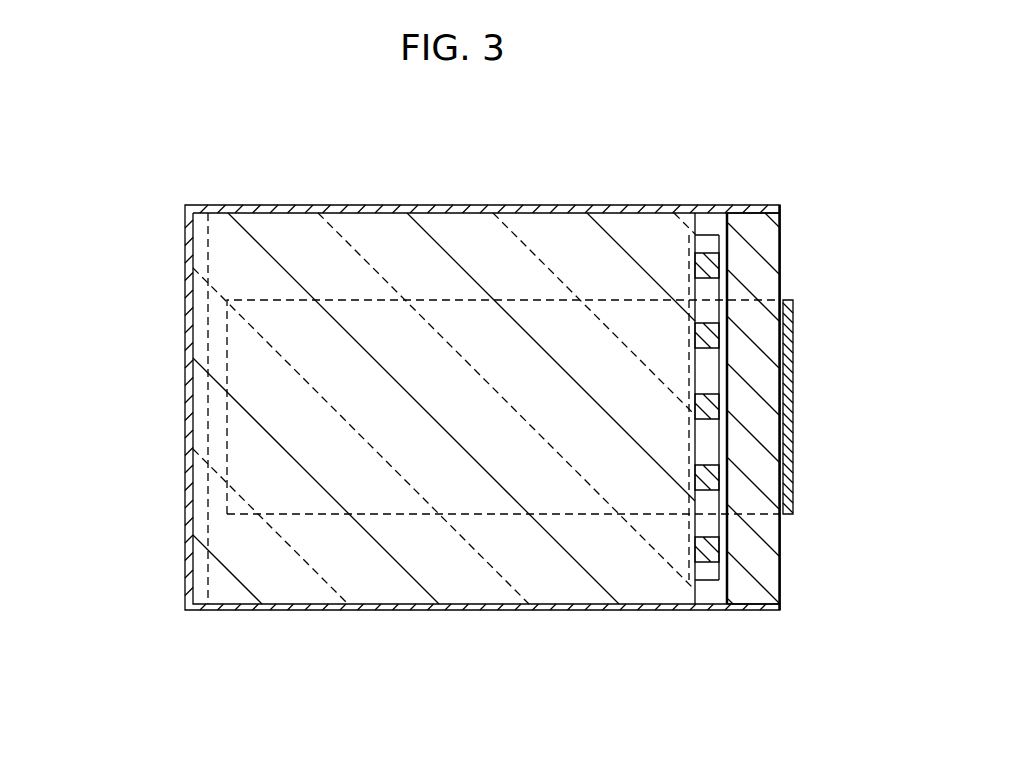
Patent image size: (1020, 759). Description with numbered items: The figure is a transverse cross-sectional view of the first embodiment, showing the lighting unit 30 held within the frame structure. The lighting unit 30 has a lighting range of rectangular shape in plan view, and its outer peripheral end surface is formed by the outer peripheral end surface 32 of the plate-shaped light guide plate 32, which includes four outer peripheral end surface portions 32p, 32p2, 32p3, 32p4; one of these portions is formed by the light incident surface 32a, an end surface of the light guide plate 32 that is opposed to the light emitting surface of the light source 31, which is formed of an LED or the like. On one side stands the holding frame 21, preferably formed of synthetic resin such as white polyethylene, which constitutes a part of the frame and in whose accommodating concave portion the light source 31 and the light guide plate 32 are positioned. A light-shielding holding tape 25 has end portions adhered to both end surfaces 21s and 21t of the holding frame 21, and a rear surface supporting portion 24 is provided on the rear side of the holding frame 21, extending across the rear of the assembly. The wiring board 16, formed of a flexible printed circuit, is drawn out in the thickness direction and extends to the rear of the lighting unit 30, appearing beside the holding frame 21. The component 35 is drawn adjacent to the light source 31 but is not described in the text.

The wiring board 16 is at (790, 452).
The holding frame 21 is at (770, 250).
The end surface of holding frame 21s is at (752, 205).
The end surface of holding frame 21t is at (755, 610).
The rear surface supporting portion 24 is at (193, 535).
The light-shielding holding tape 25 is at (188, 370).
The lighting unit 30 is at (648, 207).
The light source 31 is at (710, 398).
The light guide plate 32 is at (383, 240).
The light incident surface 32a is at (690, 316).
The outer peripheral end surface portion 32p is at (499, 208).
The outer peripheral end surface portion 32p2 is at (237, 205).
The outer peripheral end surface portion 32p3 is at (188, 320).
The outer peripheral end surface portion 32p4 is at (355, 610).
The circuit substrate 35 is at (709, 233).